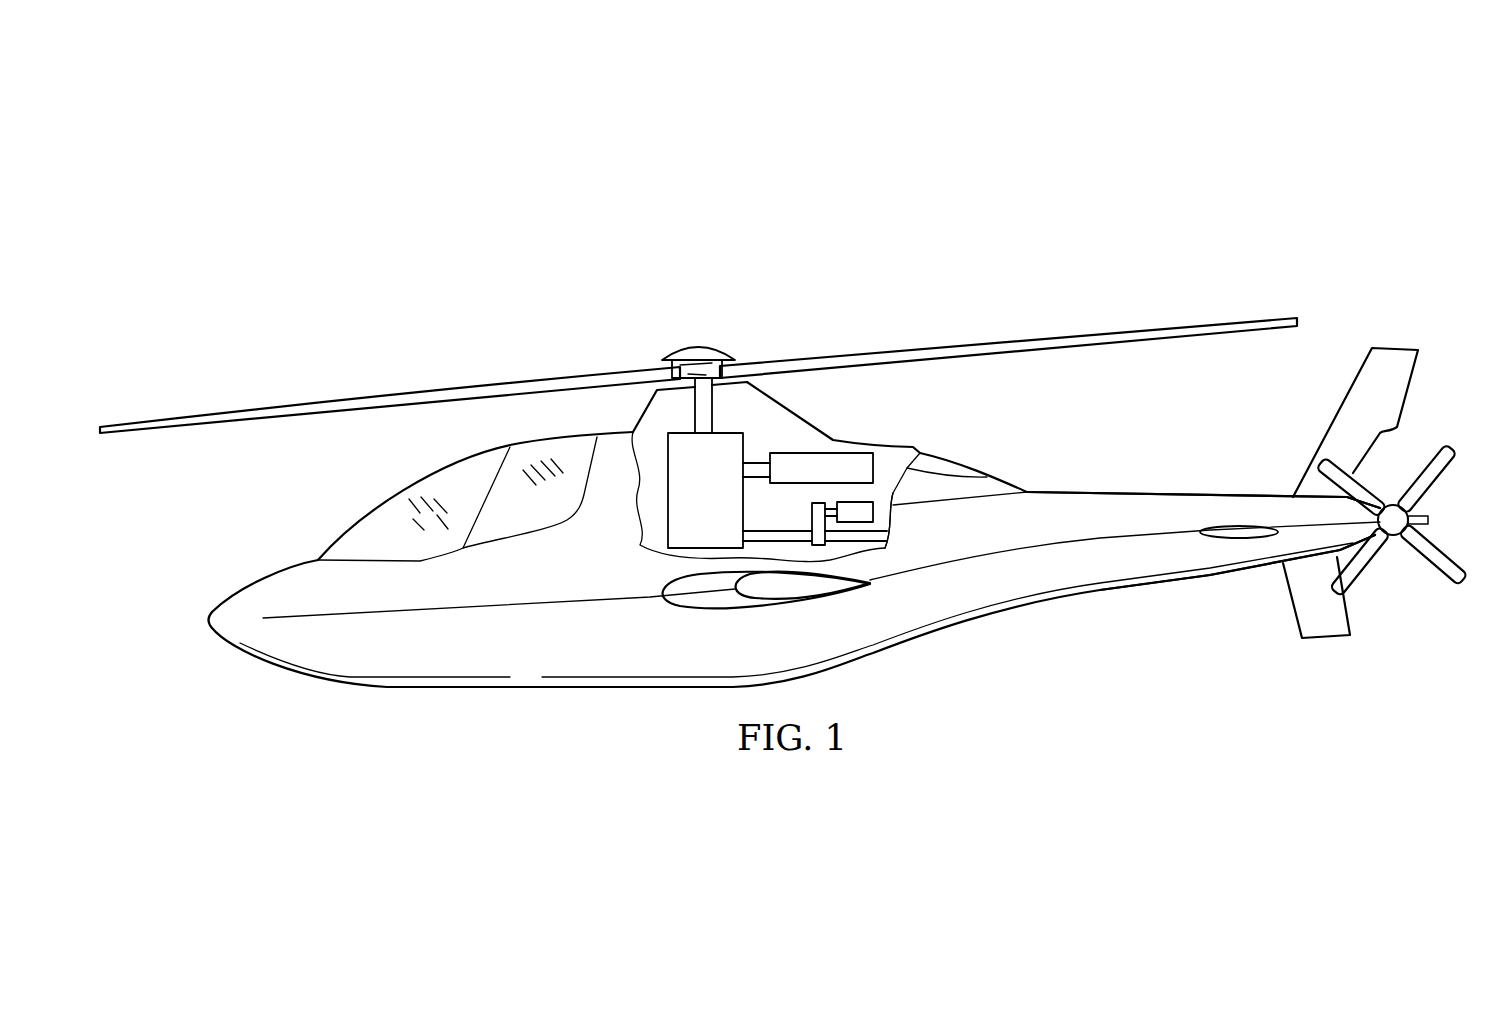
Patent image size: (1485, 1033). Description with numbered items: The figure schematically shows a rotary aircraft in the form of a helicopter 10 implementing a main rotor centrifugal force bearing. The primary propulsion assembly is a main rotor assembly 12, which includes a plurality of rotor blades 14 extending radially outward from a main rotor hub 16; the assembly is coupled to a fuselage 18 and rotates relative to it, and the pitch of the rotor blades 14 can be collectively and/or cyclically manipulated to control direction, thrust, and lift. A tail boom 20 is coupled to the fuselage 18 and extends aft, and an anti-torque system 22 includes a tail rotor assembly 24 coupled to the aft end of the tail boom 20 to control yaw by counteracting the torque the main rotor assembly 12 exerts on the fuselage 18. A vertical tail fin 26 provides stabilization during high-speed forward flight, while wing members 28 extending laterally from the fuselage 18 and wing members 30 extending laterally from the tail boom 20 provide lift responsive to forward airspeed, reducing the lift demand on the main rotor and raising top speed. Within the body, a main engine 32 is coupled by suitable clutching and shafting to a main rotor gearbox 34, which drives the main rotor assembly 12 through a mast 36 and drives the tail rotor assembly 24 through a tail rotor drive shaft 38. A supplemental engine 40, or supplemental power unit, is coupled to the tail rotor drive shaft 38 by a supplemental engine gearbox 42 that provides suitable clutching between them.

The helicopter 10 is at (783, 458).
The main rotor assembly 12 is at (698, 353).
The rotor blades 14 is at (477, 388).
The main rotor hub 16 is at (697, 348).
The fuselage 18 is at (530, 660).
The tail boom 20 is at (1062, 580).
The anti-torque system 22 is at (1391, 503).
The tail rotor assembly 24 is at (1432, 568).
The vertical tail fin 26 is at (1393, 348).
The wing members 28 is at (727, 607).
The wing members 30 is at (1230, 525).
The main engine 32 is at (853, 453).
The main rotor gearbox 34 is at (638, 535).
The mast 36 is at (695, 418).
The tail rotor drive shaft 38 is at (887, 563).
The supplemental engine 40 is at (893, 500).
The supplemental engine gearbox 42 is at (812, 520).